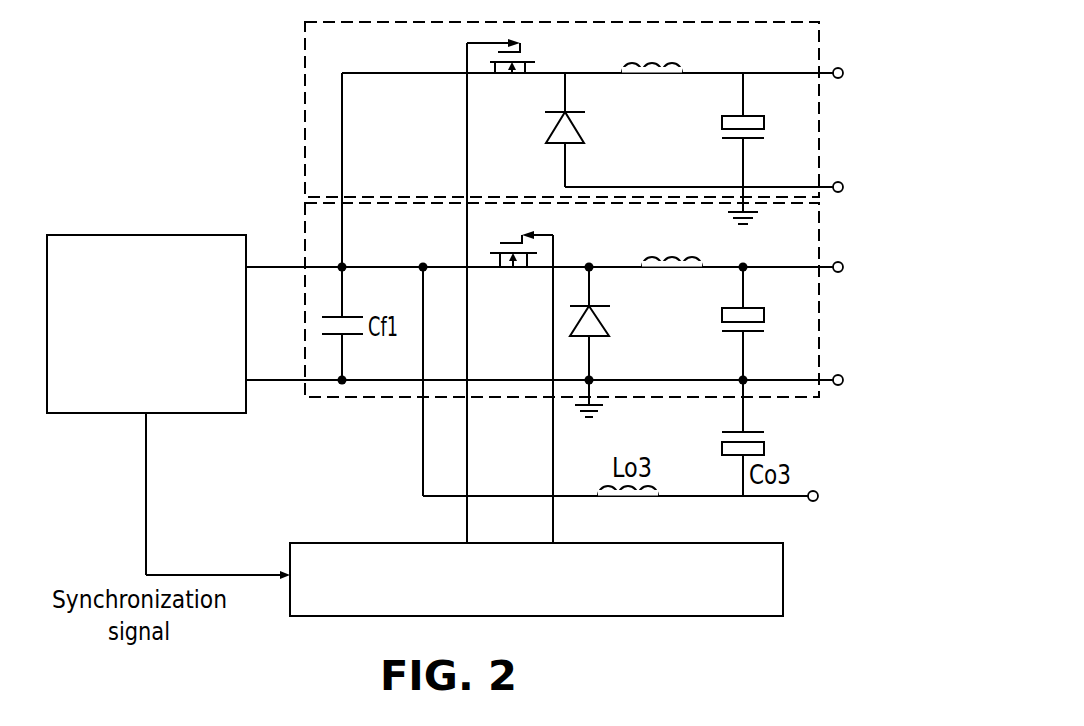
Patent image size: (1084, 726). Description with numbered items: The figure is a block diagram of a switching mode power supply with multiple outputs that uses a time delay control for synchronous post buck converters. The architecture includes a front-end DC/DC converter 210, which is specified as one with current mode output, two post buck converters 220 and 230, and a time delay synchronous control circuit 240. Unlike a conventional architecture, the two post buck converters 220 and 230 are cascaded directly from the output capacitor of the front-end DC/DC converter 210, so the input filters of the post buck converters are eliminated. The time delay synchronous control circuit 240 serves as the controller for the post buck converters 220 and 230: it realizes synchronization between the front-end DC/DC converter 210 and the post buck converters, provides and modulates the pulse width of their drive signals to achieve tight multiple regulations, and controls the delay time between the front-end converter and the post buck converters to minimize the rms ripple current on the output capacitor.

The front-end DC/DC converter 210 is at (156, 235).
The post buck converter 220 is at (305, 133).
The post buck converter 230 is at (300, 396).
The time delay synchronous control circuit 240 is at (783, 578).